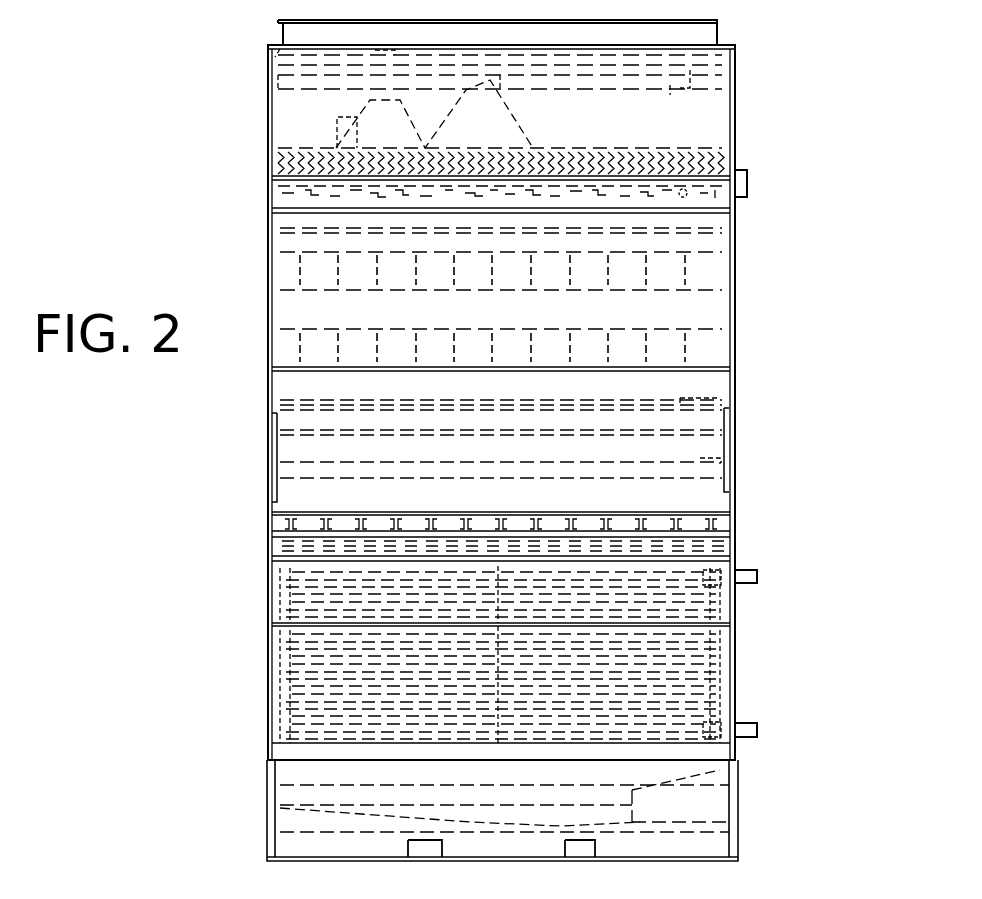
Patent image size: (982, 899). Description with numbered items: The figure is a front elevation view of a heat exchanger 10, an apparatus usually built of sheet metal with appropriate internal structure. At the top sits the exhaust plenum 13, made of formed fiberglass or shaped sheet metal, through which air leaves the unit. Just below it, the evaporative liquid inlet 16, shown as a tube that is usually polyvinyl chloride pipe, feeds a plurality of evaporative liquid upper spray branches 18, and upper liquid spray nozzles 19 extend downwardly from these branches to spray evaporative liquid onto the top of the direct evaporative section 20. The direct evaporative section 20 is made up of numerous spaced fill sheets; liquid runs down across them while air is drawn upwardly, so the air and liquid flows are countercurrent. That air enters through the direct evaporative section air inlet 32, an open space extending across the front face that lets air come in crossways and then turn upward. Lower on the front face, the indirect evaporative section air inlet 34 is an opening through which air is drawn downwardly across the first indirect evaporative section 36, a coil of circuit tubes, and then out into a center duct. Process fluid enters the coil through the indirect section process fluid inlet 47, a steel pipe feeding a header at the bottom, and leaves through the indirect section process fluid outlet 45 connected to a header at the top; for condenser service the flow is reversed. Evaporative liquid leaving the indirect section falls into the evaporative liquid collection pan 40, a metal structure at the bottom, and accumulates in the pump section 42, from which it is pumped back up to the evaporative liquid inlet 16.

The heat exchanger 10 is at (751, 77).
The exhaust plenum 13 is at (717, 40).
The evaporative liquid inlet 16 is at (747, 170).
The evaporative liquid upper spray branches 18 is at (660, 180).
The upper liquid spray nozzles 19 is at (657, 208).
The direct evaporative section 20 is at (733, 292).
The direct evaporative section air inlet 32 is at (690, 404).
The indirect evaporative section air inlet 34 is at (710, 465).
The first indirect evaporative section 36 is at (690, 665).
The evaporative liquid collection pan 40 is at (735, 812).
The pump section 42 is at (718, 790).
The indirect section process fluid outlet 45 is at (744, 568).
The indirect section process fluid inlet 47 is at (744, 723).